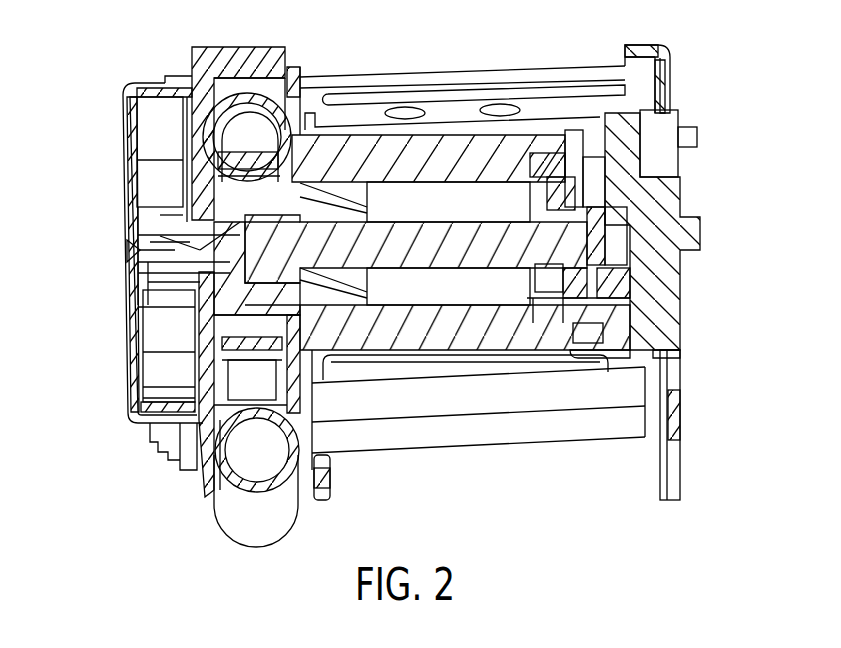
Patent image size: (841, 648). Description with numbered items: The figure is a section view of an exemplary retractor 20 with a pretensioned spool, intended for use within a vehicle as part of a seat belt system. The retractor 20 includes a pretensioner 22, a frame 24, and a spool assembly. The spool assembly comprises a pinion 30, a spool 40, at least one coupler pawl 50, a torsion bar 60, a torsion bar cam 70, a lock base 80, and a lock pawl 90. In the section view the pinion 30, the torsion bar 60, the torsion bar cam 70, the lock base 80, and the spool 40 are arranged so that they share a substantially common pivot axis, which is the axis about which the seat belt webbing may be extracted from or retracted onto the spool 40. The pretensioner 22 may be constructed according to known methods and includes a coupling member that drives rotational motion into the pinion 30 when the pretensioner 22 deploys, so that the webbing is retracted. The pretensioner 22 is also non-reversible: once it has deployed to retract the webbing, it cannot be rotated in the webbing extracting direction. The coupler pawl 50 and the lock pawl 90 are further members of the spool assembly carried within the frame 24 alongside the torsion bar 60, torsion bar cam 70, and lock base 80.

The retractor 20 is at (110, 80).
The pretensioner 22 is at (218, 58).
The frame 24 is at (665, 70).
The pinion 30 is at (130, 270).
The spool 40 is at (438, 342).
The coupler pawl 50 is at (545, 170).
The torsion bar 60 is at (473, 253).
The torsion bar cam 70 is at (560, 320).
The lock base 80 is at (673, 312).
The lock pawl 90 is at (686, 138).